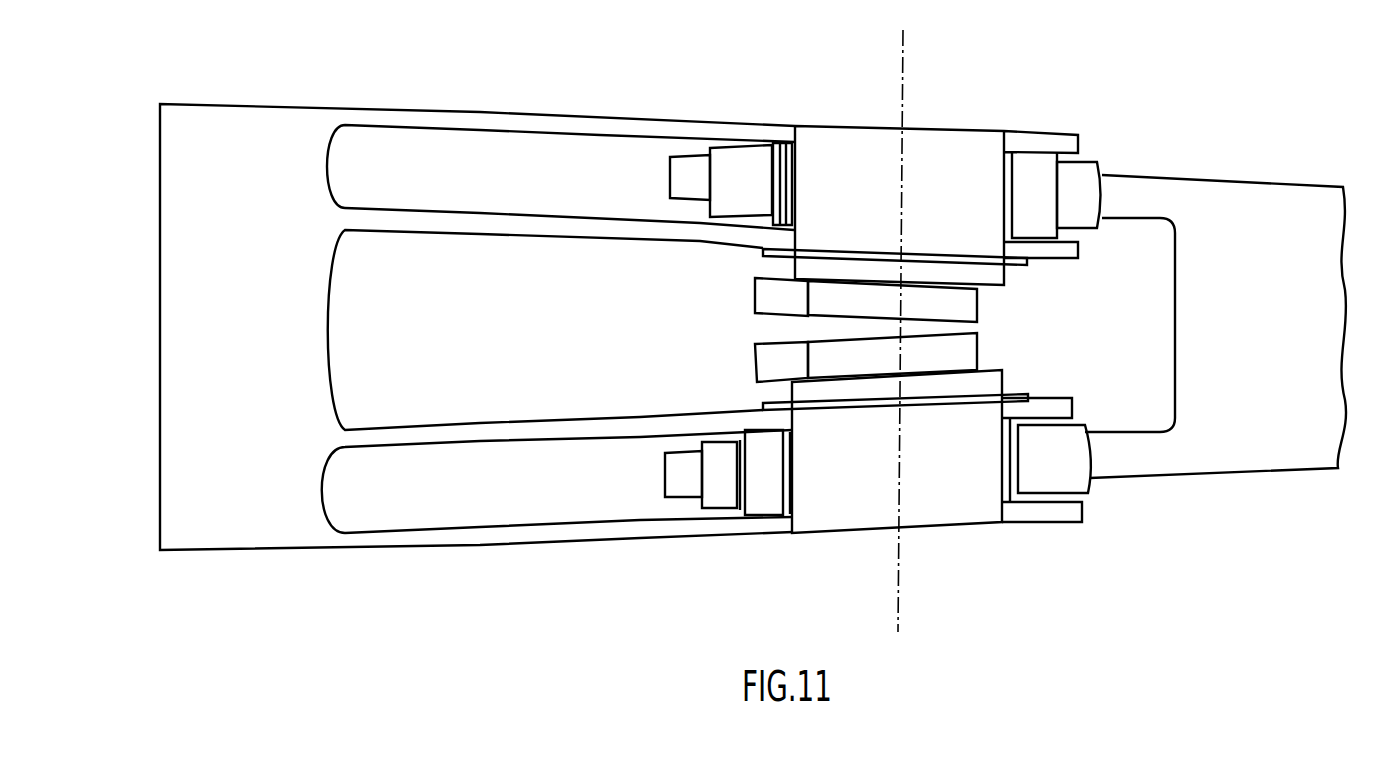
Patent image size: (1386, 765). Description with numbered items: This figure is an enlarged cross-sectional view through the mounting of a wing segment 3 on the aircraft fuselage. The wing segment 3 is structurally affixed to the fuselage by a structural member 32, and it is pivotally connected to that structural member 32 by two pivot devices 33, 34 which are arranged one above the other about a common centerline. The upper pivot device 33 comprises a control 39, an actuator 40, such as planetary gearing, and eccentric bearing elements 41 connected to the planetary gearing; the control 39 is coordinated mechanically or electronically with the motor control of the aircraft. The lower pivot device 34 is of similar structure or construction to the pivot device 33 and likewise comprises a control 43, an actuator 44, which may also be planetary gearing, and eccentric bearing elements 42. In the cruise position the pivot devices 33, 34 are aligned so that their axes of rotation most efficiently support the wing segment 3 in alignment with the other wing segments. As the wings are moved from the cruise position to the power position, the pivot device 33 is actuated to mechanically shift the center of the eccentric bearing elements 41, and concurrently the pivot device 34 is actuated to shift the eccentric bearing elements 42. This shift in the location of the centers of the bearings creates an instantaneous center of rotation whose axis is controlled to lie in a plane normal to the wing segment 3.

The wing segment 3 is at (1313, 447).
The structural member 32 is at (174, 125).
The pivot device 33 is at (977, 158).
The pivot device 34 is at (992, 522).
The control 39 is at (757, 292).
The actuator 40 is at (854, 291).
The eccentric bearing elements 41 is at (735, 160).
The eccentric bearing elements 42 is at (1082, 472).
The control 43 is at (757, 362).
The actuator 44 is at (830, 365).